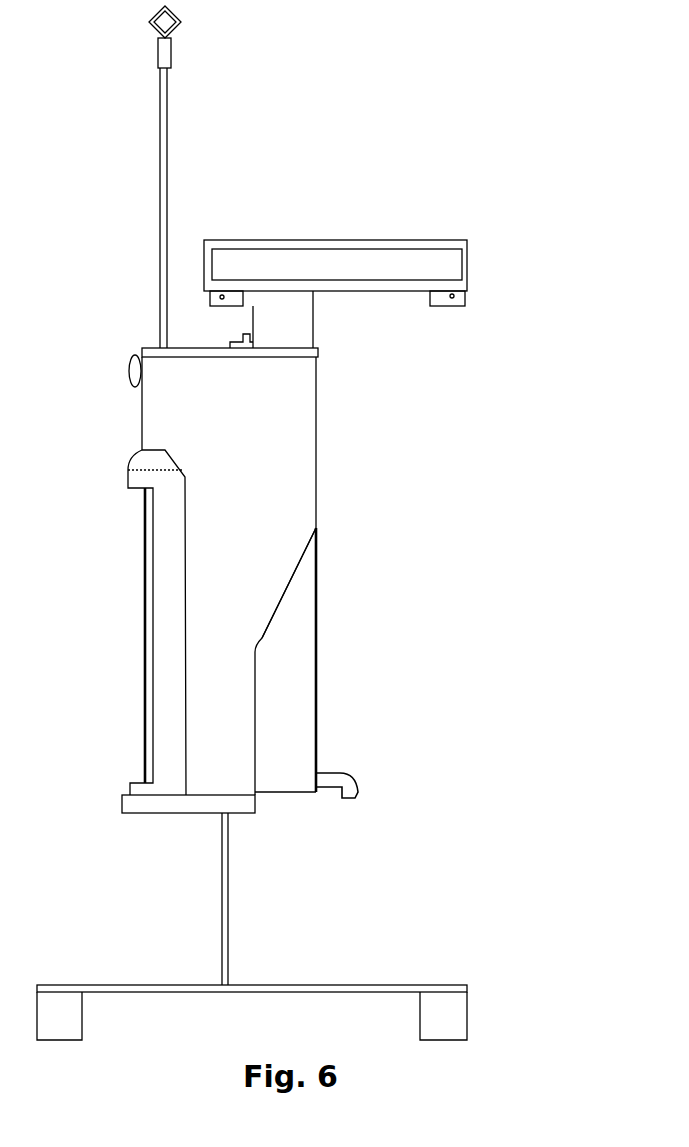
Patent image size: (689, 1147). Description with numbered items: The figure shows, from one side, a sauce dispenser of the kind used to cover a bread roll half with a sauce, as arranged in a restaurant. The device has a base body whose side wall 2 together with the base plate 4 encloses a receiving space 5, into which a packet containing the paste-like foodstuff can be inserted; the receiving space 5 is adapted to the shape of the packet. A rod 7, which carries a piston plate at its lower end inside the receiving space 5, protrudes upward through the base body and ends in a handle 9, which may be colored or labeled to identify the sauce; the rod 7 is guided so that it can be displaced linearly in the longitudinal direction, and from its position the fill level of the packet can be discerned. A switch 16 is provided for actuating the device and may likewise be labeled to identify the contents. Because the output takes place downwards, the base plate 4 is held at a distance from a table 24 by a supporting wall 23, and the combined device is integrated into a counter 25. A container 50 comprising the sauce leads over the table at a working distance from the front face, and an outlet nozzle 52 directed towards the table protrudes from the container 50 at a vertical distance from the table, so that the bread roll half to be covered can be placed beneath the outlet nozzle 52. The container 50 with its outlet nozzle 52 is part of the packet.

The side wall 2 is at (298, 475).
The base plate 4 is at (122, 810).
The receiving space 5 is at (163, 587).
The rod 7 is at (158, 150).
The handle 9 is at (160, 50).
The switch 16 is at (128, 372).
The supporting wall 23 is at (222, 868).
The table 24 is at (357, 985).
The counter 25 is at (457, 263).
The container 50 is at (145, 677).
The outlet nozzle 52 is at (358, 792).